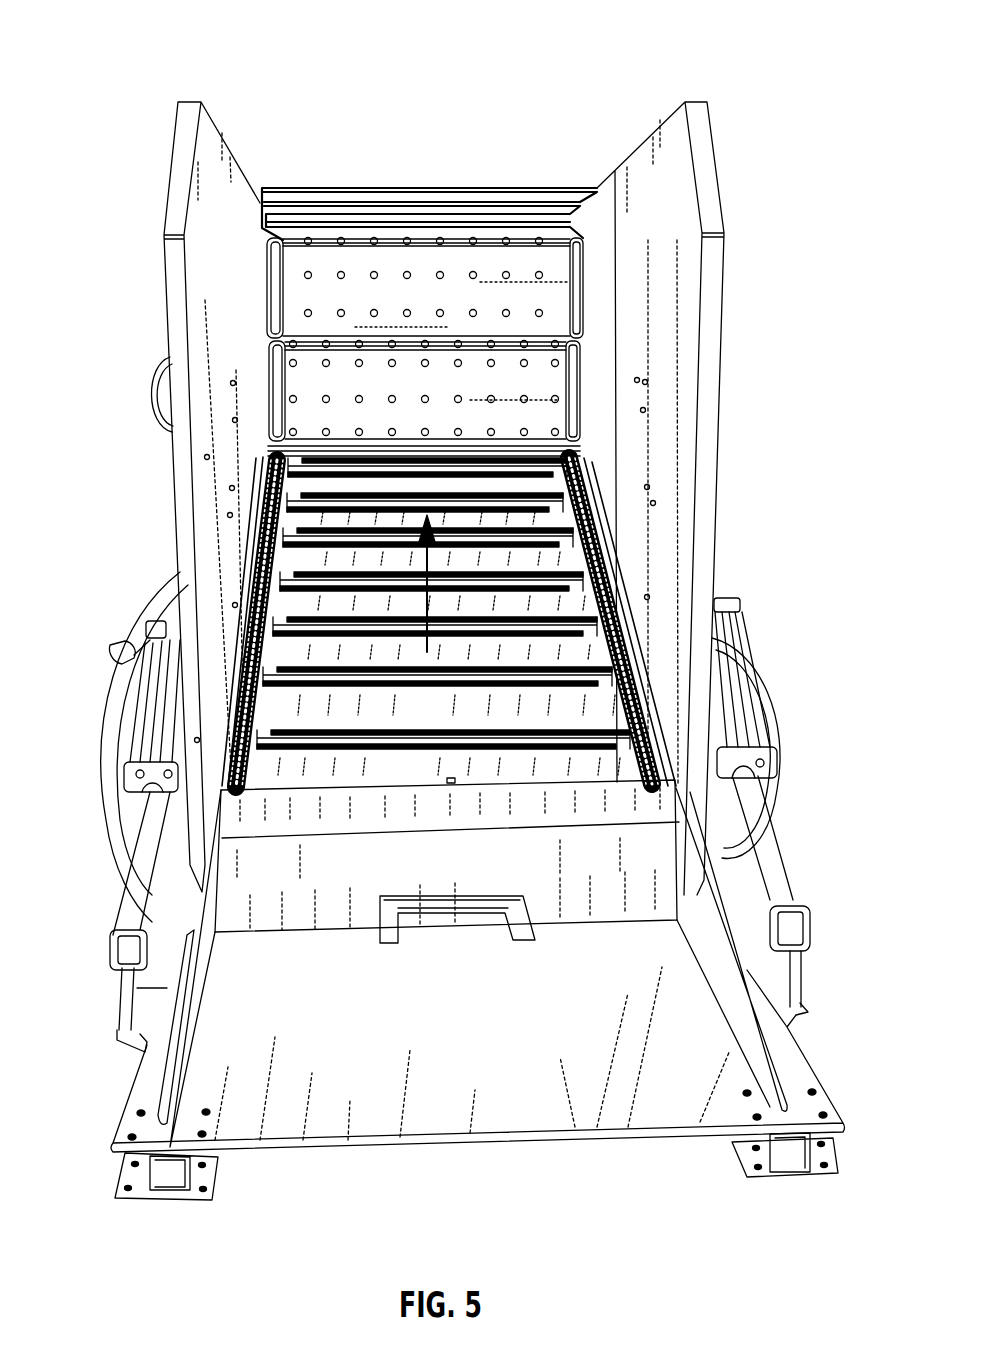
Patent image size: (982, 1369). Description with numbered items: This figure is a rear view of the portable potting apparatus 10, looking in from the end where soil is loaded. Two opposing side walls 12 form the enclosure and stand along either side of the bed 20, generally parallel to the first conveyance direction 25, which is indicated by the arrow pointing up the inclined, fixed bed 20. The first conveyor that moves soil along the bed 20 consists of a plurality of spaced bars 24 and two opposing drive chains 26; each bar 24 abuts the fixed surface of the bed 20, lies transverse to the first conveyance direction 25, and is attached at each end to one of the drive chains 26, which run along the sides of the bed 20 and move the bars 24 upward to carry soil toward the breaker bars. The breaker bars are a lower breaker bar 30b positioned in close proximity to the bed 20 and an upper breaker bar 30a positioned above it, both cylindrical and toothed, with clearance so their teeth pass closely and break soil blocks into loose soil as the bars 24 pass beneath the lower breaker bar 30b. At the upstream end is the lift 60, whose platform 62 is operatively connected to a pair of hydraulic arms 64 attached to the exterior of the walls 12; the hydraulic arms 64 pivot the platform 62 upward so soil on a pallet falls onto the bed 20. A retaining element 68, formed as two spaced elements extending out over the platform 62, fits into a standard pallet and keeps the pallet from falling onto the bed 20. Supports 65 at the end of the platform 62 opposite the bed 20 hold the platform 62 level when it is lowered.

The potting apparatus 10 is at (143, 44).
The side walls 12 is at (168, 262).
The bed 20 is at (609, 711).
The bars 24 is at (330, 638).
The first conveyance direction 25 is at (431, 640).
The drive chains 26 is at (262, 606).
The upper breaker bar 30a is at (360, 247).
The lower breaker bar 30b is at (440, 357).
The lift 60 is at (107, 997).
The platform 62 is at (479, 1050).
The hydraulic arms 64 is at (137, 880).
The supports 65 is at (163, 1200).
The retaining element 68 is at (385, 917).